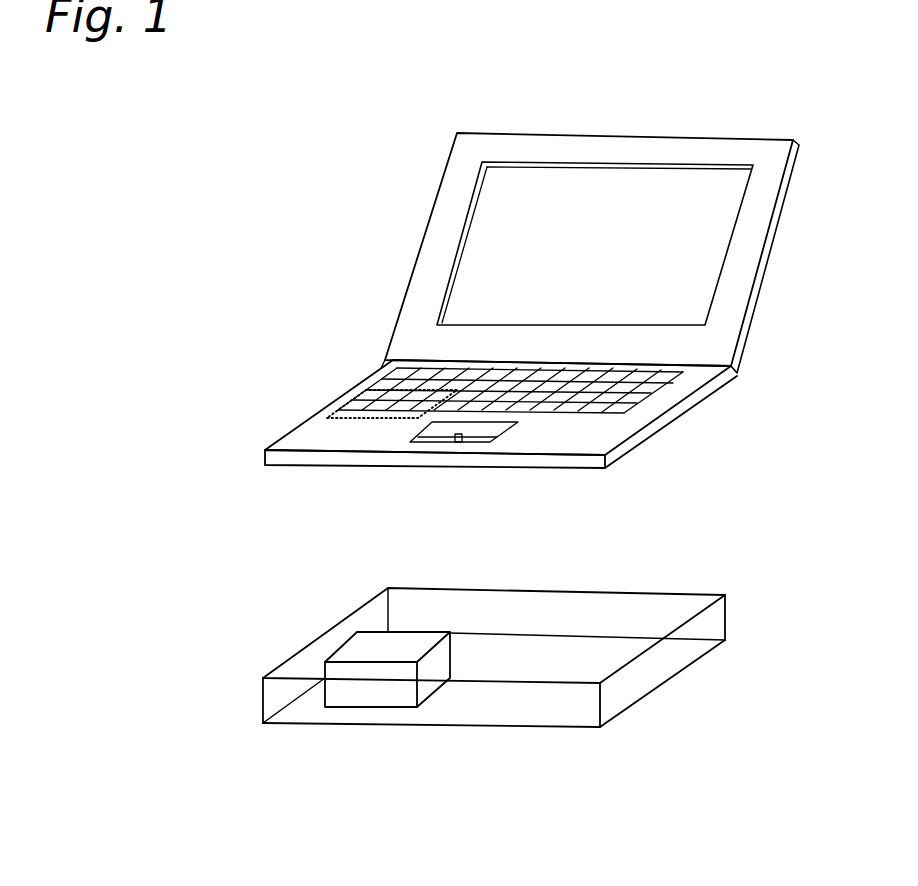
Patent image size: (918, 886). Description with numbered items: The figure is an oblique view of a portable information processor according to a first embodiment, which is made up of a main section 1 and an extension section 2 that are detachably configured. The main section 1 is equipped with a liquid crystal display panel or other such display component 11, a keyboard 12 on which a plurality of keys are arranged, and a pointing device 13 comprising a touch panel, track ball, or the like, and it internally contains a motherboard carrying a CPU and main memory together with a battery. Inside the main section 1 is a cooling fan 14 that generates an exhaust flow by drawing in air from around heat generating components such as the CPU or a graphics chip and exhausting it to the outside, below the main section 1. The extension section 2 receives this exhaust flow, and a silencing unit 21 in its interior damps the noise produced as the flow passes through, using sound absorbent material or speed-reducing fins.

The main section 1 is at (554, 302).
The display component 11 is at (688, 258).
The keyboard 12 is at (643, 390).
The pointing device 13 is at (487, 428).
The cooling fan 14 is at (350, 418).
The extension section 2 is at (496, 694).
The silencing unit 21 is at (382, 690).